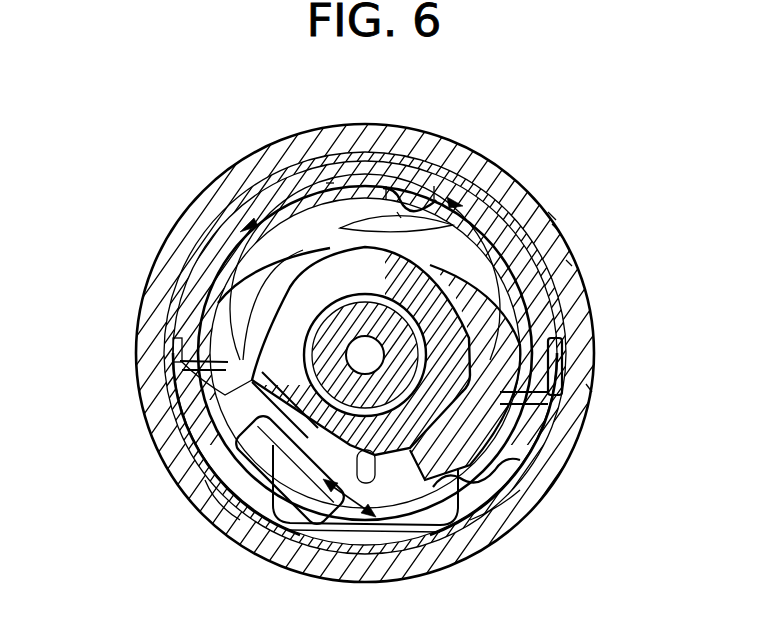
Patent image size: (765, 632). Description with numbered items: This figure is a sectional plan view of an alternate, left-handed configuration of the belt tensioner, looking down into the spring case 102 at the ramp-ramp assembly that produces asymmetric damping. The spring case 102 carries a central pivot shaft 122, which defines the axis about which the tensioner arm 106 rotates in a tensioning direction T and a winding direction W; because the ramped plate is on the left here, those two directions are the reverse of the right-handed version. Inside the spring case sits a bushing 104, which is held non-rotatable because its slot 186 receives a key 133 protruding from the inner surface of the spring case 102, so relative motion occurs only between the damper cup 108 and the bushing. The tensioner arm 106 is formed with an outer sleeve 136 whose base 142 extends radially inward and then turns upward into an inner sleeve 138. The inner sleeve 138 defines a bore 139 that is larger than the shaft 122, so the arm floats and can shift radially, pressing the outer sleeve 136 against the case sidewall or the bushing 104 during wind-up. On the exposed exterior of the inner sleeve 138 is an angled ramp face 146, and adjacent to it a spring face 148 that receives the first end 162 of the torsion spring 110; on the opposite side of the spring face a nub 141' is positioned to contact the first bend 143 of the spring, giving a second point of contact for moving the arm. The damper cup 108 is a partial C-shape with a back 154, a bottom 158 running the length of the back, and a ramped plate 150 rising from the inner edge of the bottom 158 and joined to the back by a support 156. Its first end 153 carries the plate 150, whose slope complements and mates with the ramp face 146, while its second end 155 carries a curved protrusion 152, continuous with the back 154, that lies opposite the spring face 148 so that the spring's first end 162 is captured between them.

The spring case 102 is at (540, 215).
The bushing 104 is at (268, 540).
The tensioner arm 106 is at (238, 217).
The damper cup 108 is at (588, 388).
The torsion spring 110 is at (555, 226).
The pivot shaft 122 is at (480, 205).
The key 133 is at (482, 518).
The outer sleeve 136 is at (240, 290).
The inner sleeve 138 is at (387, 322).
The bore 139 is at (412, 190).
The nub 141' is at (588, 193).
The base 142 is at (192, 266).
The first bend 143 is at (568, 262).
The ramp face 146 is at (205, 328).
The spring face 148 is at (470, 247).
The plate 150 is at (195, 438).
The protrusion 152 is at (527, 470).
The first end 153 is at (563, 330).
The back 154 is at (175, 448).
The second end 155 is at (180, 380).
The support 156 is at (245, 515).
The bottom 158 is at (398, 513).
The first end 162 is at (470, 503).
The slot 186 is at (488, 508).
The winding direction W is at (330, 183).
The tensioning direction T is at (397, 218).